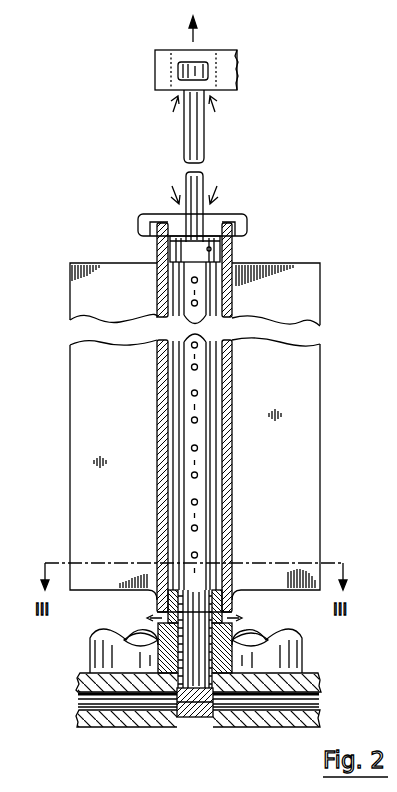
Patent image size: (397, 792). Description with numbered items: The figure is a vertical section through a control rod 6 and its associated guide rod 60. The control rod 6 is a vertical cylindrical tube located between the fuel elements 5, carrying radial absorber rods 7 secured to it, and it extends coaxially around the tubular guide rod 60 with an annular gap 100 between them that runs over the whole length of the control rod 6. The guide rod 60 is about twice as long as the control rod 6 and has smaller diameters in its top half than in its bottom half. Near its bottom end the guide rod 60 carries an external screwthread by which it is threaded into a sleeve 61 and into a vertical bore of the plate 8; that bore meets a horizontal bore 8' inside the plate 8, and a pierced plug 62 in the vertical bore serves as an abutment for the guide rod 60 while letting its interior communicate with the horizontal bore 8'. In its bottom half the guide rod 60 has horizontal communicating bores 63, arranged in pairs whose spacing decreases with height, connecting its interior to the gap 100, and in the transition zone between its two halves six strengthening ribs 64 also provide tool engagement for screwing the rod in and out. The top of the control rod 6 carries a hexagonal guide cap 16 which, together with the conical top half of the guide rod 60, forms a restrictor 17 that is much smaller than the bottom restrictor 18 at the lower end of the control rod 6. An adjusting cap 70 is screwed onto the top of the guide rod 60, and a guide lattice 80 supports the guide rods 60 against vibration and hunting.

The fuel elements 5 is at (284, 652).
The control rod 6 is at (228, 302).
The absorber rods 7 is at (305, 298).
The plate 8 is at (198, 721).
The horizontal bore 8' is at (224, 705).
The guide cap 16 is at (228, 217).
The restrictor 17 is at (204, 212).
The bottom restrictor 18 is at (232, 614).
The guide rod 60 is at (183, 140).
The sleeve 61 is at (224, 668).
The plug 62 is at (182, 712).
The communicating bores 63 is at (198, 500).
The strengthening ribs 64 is at (211, 249).
The adjusting cap 70 is at (190, 68).
The guide lattice 80 is at (164, 78).
The annular gap 100 is at (303, 332).